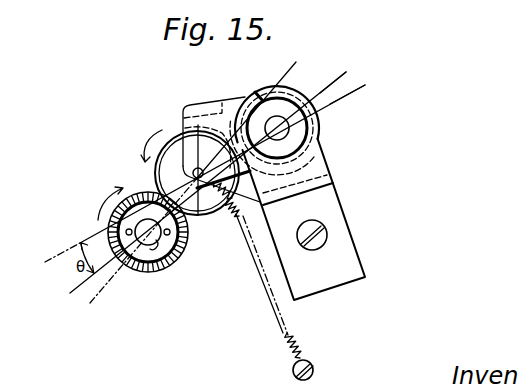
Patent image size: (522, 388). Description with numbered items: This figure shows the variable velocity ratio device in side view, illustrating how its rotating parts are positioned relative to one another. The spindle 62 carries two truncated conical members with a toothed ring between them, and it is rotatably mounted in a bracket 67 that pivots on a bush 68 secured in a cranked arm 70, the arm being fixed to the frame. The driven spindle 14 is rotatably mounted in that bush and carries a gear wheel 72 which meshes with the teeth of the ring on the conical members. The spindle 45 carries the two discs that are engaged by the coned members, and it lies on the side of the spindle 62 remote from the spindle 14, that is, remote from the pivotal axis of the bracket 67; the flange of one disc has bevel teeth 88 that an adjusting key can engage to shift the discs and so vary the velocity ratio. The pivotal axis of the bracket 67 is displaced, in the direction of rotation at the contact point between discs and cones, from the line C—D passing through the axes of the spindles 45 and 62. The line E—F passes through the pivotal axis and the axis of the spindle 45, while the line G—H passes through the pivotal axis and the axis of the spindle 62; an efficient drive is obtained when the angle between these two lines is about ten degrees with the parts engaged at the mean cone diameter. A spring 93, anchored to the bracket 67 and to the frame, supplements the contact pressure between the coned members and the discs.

The spindle 14 is at (316, 149).
The spindle 45 is at (140, 272).
The spindle 62 is at (207, 214).
The bracket 67 is at (201, 104).
The bush 68 is at (259, 96).
The cranked arm 70 is at (361, 247).
The gear wheel 72 is at (321, 124).
The bevel teeth 88 is at (176, 262).
The spring 93 is at (258, 280).
The line C—D end point C is at (134, 252).
The line C—D end point D is at (254, 110).
The line E—F end point E is at (202, 188).
The line E—F end point F is at (339, 73).
The line G—H end point G is at (196, 179).
The line G—H end point H is at (351, 89).